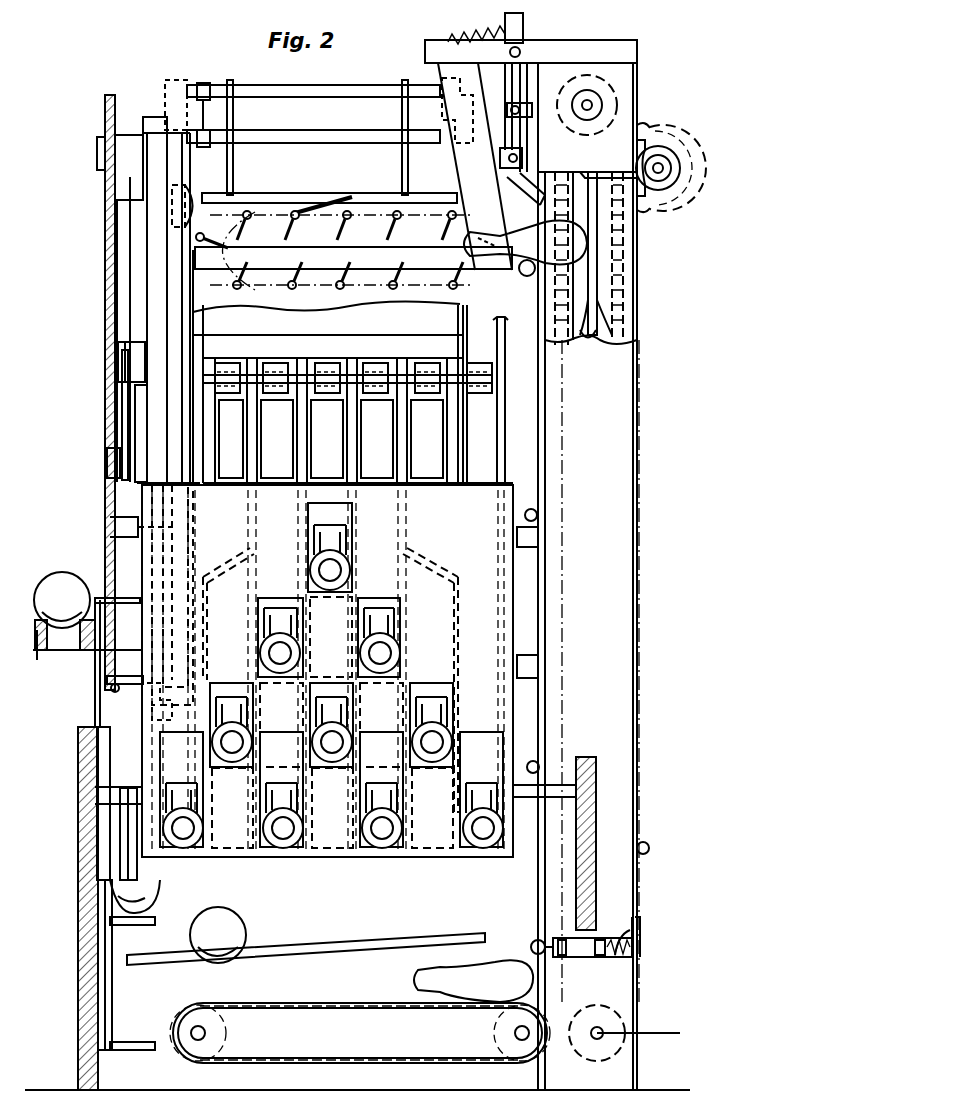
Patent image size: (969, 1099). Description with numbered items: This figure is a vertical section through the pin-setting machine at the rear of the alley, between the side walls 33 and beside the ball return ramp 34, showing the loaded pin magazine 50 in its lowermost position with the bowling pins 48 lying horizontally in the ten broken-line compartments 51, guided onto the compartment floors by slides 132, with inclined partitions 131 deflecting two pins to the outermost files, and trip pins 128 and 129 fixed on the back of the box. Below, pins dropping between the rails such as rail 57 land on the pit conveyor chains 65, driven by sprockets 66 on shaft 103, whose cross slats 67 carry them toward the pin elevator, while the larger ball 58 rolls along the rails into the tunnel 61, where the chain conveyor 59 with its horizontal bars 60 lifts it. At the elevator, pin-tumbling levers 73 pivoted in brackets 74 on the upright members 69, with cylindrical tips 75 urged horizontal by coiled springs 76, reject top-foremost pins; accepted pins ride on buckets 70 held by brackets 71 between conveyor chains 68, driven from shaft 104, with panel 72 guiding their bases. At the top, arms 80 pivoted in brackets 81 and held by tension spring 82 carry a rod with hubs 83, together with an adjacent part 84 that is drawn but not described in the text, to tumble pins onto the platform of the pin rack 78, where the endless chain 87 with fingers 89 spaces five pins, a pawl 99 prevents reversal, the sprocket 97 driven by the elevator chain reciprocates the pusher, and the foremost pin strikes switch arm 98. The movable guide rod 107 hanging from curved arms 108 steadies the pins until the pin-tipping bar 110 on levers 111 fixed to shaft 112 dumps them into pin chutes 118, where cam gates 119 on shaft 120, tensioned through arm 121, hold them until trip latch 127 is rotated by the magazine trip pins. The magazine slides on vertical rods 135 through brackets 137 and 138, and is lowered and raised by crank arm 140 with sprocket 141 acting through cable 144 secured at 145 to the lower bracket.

The side walls 33 is at (80, 942).
The ball return ramp 34 is at (65, 652).
The bowling pins 48 is at (365, 840).
The magazine 50 is at (515, 600).
The compartments 51 is at (331, 675).
The rail 57 is at (362, 945).
The ball 58 is at (60, 582).
The chain conveyor 59 is at (100, 997).
The horizontal bars 60 is at (150, 920).
The tunnel 61 is at (108, 852).
The chains 65 is at (365, 1063).
The sprockets 66 is at (228, 1033).
The cross slats 67 is at (365, 1008).
The conveyor chains 68 is at (588, 340).
The upright members 69 is at (637, 85).
The buckets 70 is at (545, 272).
The brackets 71 is at (598, 262).
The panel 72 is at (600, 272).
The pin-tumbling levers 73 is at (583, 957).
The brackets 74 is at (548, 940).
The cylindrical tips 75 is at (530, 947).
The coiled springs 76 is at (640, 917).
The pin rack 78 is at (378, 250).
The arms 80 is at (512, 80).
The brackets 81 is at (605, 52).
The tension spring 82 is at (450, 40).
The hubs 83 is at (500, 158).
The strut 84 is at (512, 188).
The endless chain 87 is at (310, 287).
The fingers 89 is at (262, 235).
The sprocket 97 is at (670, 145).
The switch arm 98 is at (195, 195).
The pawl 99 is at (315, 212).
The shaft 103 is at (522, 1040).
The shaft 104 is at (632, 1033).
The movable guide rod 107 is at (375, 200).
The curved arms 108 is at (228, 118).
The pin-tipping bar 110 is at (328, 128).
The levers 111 is at (210, 100).
The shaft 112 is at (404, 99).
The pin chutes 118 is at (385, 466).
The cam gates 119 is at (420, 390).
The shaft 120 is at (330, 368).
The arm 121 is at (140, 358).
The trip latch 127 is at (475, 345).
The trip pin 128 is at (470, 660).
The trip pin 129 is at (474, 748).
The inclined partitions 131 is at (215, 566).
The slides 132 is at (405, 800).
The vertical rods 135 is at (157, 296).
The bracket 137 is at (120, 523).
The lower magazine bracket 138 is at (107, 682).
The crank arm 140 is at (122, 417).
The sprocket 141 is at (107, 463).
The cable 144 is at (108, 240).
The cable securing point 145 is at (100, 122).